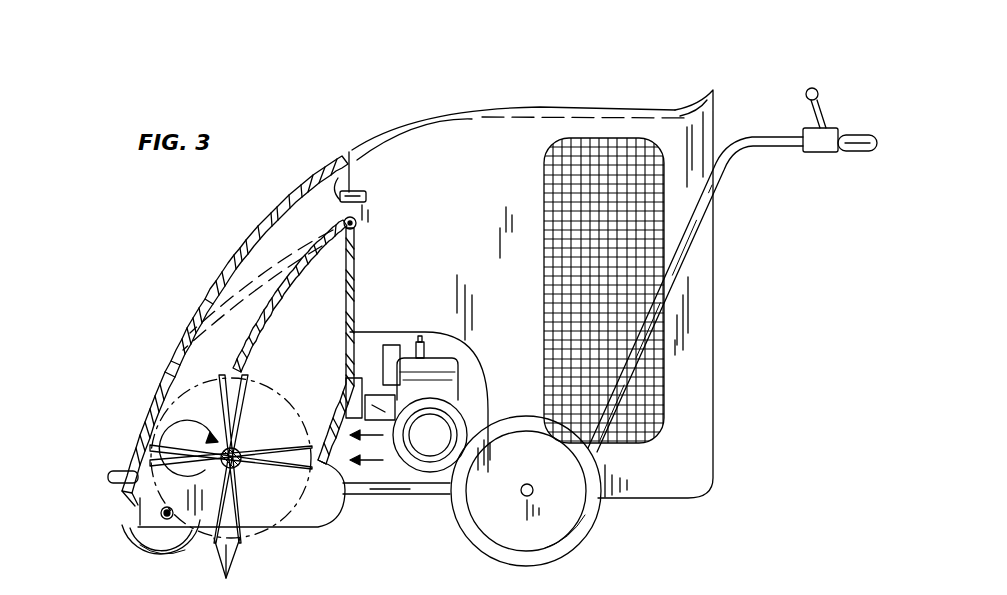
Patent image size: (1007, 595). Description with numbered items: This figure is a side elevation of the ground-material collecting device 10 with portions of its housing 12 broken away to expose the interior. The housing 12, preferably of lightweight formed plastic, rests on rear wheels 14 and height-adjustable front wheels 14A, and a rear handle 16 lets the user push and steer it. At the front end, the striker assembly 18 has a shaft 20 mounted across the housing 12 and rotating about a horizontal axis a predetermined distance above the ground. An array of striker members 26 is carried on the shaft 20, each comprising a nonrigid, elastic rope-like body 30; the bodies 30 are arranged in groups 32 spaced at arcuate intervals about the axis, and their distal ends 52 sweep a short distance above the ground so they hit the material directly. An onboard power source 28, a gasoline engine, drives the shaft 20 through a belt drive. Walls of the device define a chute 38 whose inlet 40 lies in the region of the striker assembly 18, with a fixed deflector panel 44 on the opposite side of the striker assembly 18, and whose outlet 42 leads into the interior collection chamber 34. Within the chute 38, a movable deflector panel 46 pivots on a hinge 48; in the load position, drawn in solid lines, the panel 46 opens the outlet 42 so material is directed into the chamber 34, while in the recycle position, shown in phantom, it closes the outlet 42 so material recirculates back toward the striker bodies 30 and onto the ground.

The device 10 is at (626, 88).
The housing 12 is at (415, 168).
The wheels 14 is at (552, 497).
The wheels 14A is at (168, 546).
The rear handle 16 is at (785, 137).
The striker assembly 18 is at (181, 368).
The shaft 20 is at (242, 447).
The striker members 26 is at (266, 368).
The power source 28 is at (432, 435).
The body 30 is at (213, 440).
The groups 32 is at (231, 375).
The interior chamber 34 is at (586, 162).
The chute 38 is at (237, 278).
The inlet 40 is at (160, 441).
The outlet 42 is at (338, 172).
The fixed deflector panel 44 is at (322, 492).
The movable deflector panel 46 is at (303, 263).
The hinge 48 is at (372, 214).
The distal ends 52 is at (227, 566).